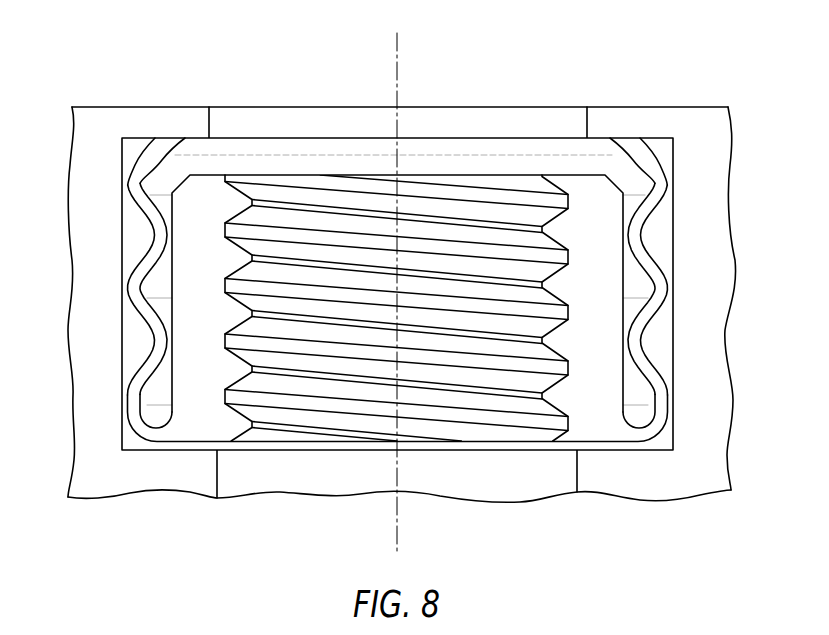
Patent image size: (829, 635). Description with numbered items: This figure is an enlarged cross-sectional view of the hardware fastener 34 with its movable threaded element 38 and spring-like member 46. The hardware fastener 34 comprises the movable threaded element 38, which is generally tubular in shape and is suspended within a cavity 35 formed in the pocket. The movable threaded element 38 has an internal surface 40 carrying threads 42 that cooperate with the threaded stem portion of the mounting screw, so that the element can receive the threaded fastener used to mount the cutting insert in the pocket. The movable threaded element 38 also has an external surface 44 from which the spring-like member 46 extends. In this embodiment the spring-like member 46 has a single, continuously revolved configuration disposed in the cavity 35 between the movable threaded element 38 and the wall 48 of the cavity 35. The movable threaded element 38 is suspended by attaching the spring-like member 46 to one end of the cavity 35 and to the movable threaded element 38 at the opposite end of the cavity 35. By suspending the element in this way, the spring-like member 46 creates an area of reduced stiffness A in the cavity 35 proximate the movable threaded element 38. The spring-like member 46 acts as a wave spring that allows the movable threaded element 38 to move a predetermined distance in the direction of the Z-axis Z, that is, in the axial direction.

The hardware fastener 34 is at (660, 164).
The cavity 35 is at (133, 441).
The movable threaded element 38 is at (170, 278).
The internal surface 40 is at (263, 259).
The threads 42 is at (248, 296).
The external surface 44 is at (172, 297).
The spring-like member 46 is at (135, 333).
The wall of the cavity 48 is at (148, 455).
The area of reduced stiffness A is at (139, 148).
The Z-axis Z is at (398, 55).